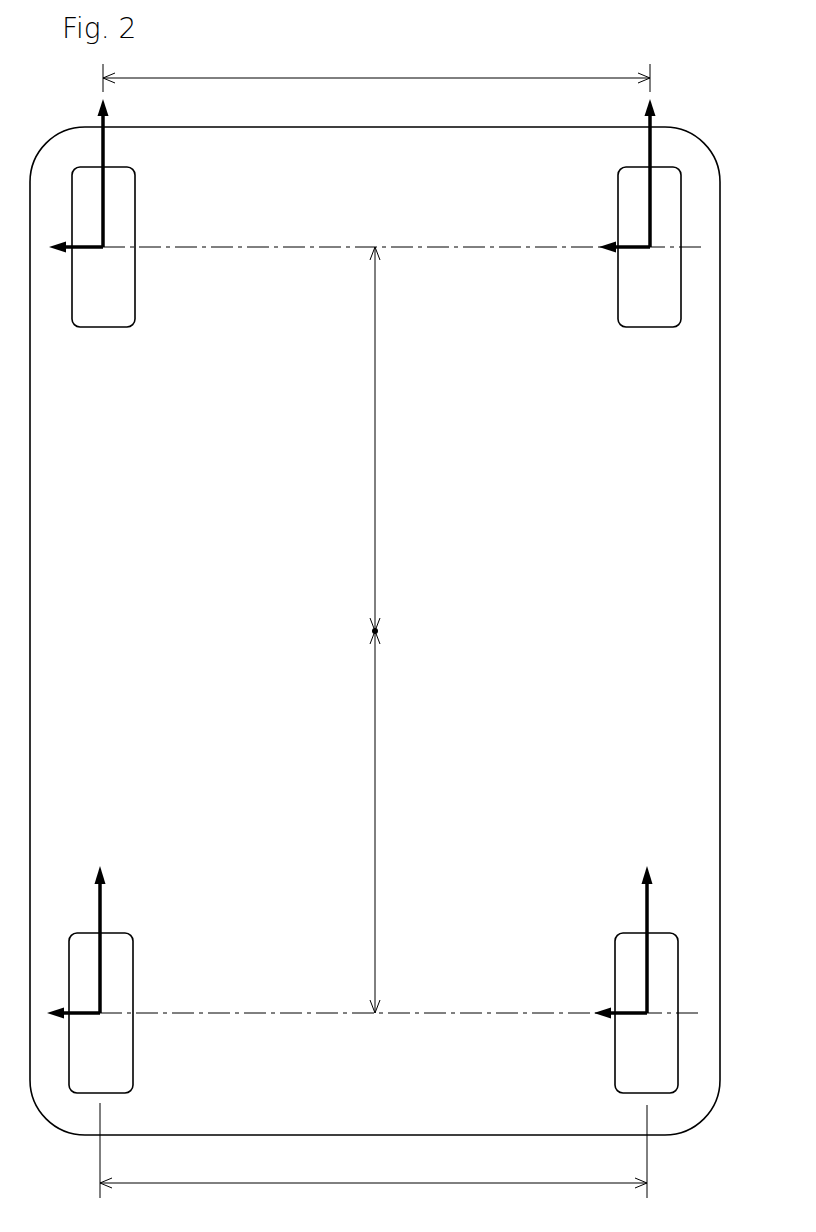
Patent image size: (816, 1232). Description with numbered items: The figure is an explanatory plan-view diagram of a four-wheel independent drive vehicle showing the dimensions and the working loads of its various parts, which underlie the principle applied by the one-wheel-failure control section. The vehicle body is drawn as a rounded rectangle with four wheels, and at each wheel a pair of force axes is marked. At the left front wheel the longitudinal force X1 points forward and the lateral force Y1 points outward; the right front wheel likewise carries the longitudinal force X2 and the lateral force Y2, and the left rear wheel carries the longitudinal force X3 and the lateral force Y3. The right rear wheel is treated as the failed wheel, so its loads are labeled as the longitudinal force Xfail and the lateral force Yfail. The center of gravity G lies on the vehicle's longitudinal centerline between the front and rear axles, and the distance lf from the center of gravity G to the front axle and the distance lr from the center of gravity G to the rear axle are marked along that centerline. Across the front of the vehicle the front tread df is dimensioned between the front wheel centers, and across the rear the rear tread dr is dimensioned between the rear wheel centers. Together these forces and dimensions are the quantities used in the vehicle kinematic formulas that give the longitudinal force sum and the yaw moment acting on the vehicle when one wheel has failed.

The longitudinal force acting on the left front wheel X1 is at (120, 171).
The lateral force acting on the left front wheel Y1 is at (68, 265).
The longitudinal force acting on the right front wheel X2 is at (667, 171).
The lateral force acting on the right front wheel Y2 is at (611, 265).
The longitudinal force acting on the left rear wheel X3 is at (117, 938).
The lateral force acting on the left rear wheel Y3 is at (66, 1031).
The longitudinal force acting on the failed wheel Xfail is at (672, 938).
The lateral force acting on the failed wheel Yfail is at (597, 1031).
The front tread df is at (376, 69).
The rear tread dr is at (373, 1160).
The distance from center of gravity to front axle lf is at (383, 439).
The distance from center of gravity to rear axle lr is at (382, 822).
The center of gravity G is at (378, 631).